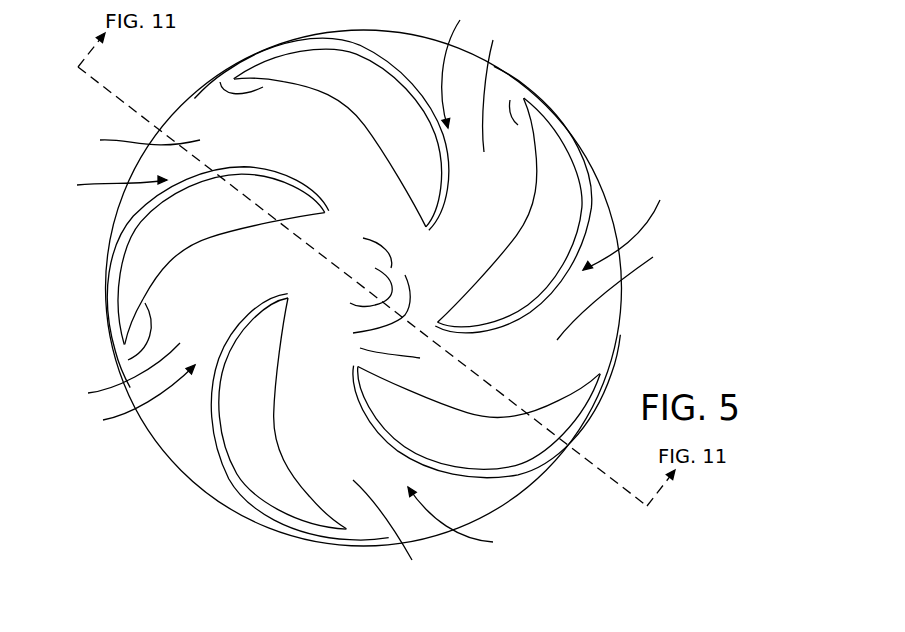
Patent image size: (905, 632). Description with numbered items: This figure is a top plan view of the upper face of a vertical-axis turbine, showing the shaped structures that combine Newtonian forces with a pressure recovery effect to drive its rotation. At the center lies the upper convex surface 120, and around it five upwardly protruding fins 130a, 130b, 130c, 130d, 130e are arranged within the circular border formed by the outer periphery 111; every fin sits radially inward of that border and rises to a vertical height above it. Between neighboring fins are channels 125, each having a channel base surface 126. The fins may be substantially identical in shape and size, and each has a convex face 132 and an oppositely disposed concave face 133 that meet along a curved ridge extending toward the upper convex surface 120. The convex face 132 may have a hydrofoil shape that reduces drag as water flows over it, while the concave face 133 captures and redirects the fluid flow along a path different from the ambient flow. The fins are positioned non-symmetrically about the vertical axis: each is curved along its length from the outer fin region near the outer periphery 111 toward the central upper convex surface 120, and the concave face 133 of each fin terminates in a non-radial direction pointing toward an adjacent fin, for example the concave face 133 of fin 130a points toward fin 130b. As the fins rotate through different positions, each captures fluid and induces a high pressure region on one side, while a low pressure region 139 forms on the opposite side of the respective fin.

The outer periphery 111 is at (150, 432).
The upper convex surface 120 is at (381, 287).
The channels 125 is at (360, 275).
The channel base surfaces 126 is at (370, 298).
The fin 130a is at (280, 457).
The fin 130b is at (150, 285).
The fin 130c is at (333, 87).
The fin 130d is at (535, 172).
The fin 130e is at (583, 358).
The convex face 132 is at (333, 77).
The concave face 133 is at (220, 82).
The low pressure region 139 is at (683, 13).